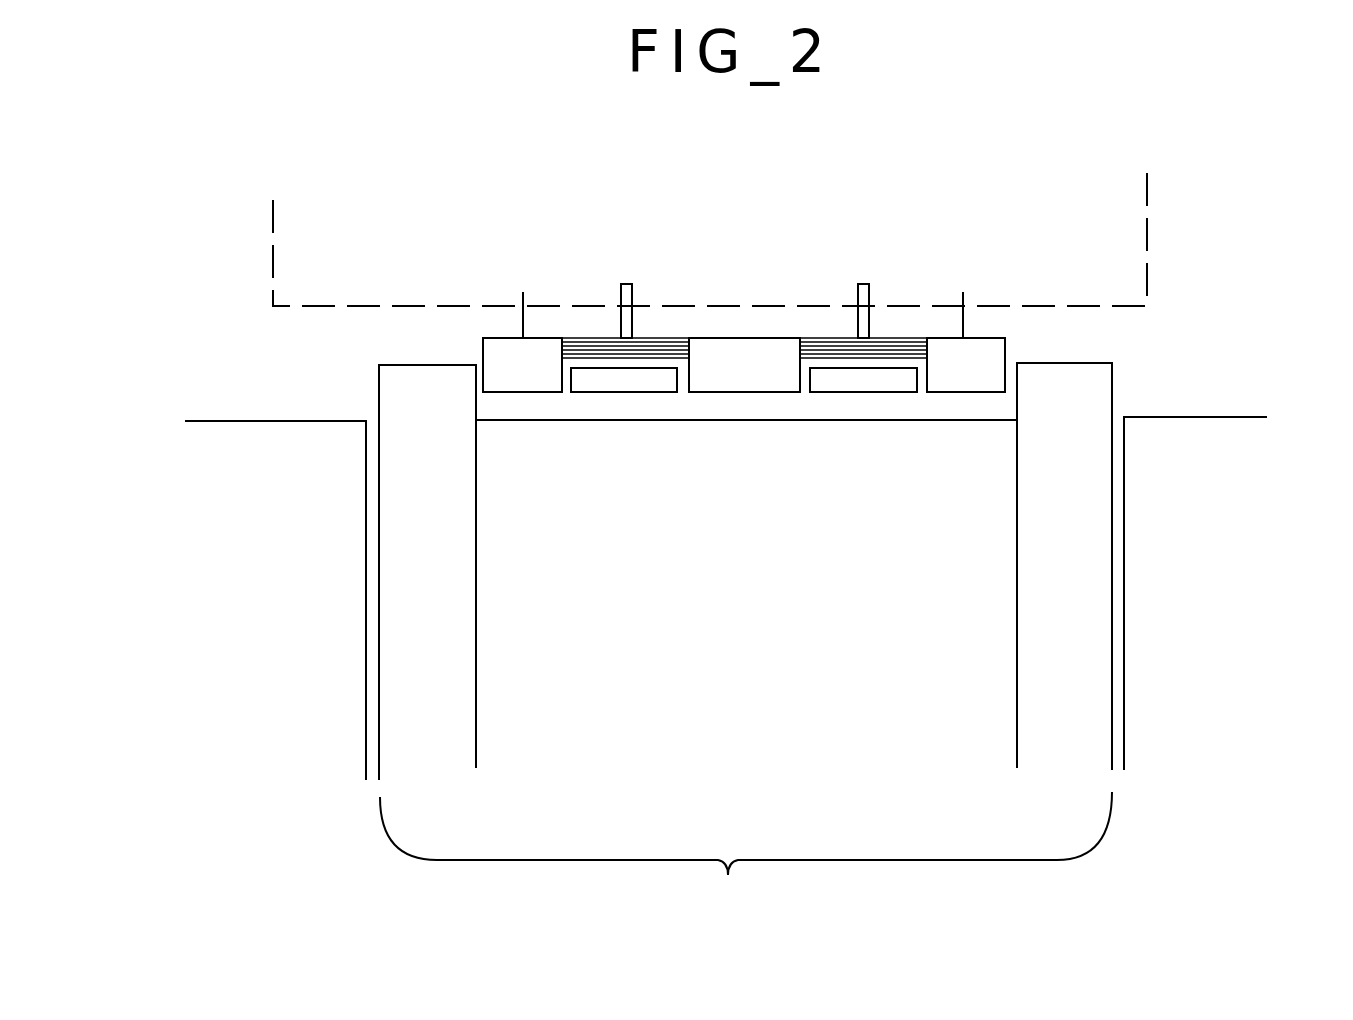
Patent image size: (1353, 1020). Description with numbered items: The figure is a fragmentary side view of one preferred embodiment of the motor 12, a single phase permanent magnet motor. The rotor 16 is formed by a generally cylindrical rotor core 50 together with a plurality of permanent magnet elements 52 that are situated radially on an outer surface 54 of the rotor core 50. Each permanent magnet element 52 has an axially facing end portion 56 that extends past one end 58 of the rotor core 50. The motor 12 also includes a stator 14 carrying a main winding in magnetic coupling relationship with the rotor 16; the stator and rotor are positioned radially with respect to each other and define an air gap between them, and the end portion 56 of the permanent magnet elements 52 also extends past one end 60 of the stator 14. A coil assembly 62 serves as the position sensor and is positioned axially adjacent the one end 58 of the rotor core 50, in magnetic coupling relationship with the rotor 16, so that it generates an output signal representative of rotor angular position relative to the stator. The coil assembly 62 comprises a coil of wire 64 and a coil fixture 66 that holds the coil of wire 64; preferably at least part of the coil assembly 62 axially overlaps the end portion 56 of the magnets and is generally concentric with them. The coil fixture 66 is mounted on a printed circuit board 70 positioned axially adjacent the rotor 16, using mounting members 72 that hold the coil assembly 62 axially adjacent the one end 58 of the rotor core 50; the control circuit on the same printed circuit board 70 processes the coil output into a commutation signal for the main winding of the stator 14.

The motor 12 is at (1272, 182).
The stator 14 is at (287, 586).
The rotor 16 is at (746, 853).
The rotor core 50 is at (760, 635).
The permanent magnet elements 52 is at (446, 638).
The outer surface 54 is at (476, 530).
The end portion 56 is at (370, 390).
The one end 58 is at (740, 420).
The one end 60 is at (266, 421).
The coil assembly 62 is at (1016, 330).
The coil of wire 64 is at (655, 342).
The coil fixture 66 is at (503, 353).
The printed circuit board 70 is at (268, 218).
The mounting members 72 is at (624, 284).